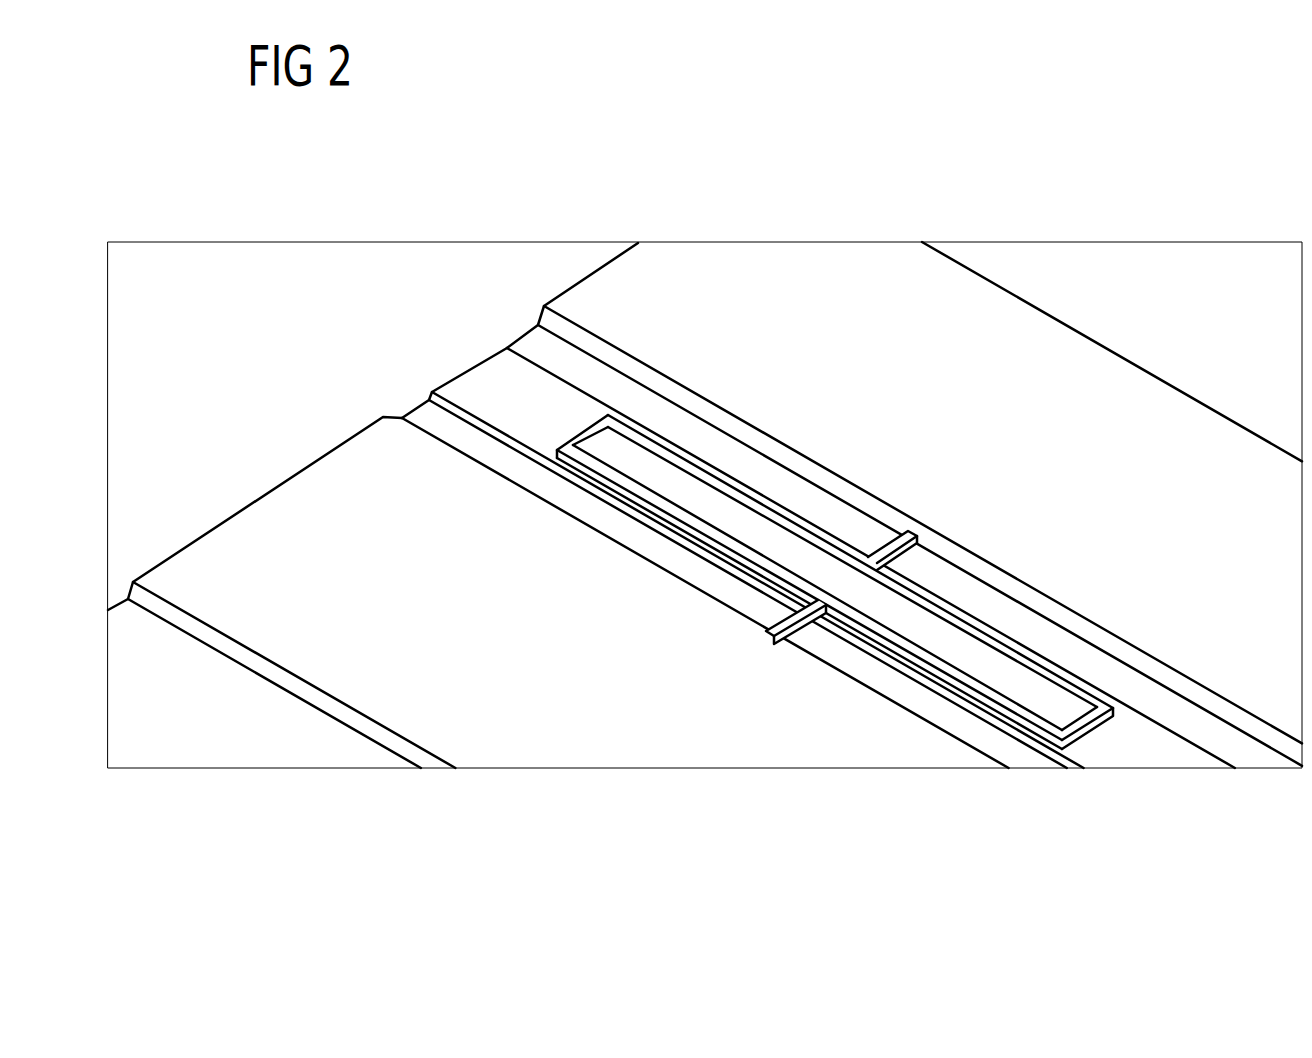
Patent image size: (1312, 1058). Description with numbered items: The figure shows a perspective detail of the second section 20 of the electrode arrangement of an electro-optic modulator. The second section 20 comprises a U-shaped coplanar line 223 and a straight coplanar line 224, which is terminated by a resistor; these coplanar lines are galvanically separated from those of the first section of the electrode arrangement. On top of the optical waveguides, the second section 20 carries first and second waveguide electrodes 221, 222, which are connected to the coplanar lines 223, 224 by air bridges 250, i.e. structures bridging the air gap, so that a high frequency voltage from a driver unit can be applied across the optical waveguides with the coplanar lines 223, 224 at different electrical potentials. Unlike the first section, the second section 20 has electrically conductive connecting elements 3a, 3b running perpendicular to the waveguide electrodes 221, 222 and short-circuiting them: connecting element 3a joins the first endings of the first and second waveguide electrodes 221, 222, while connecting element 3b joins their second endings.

The second section of the electrode arrangement 20 is at (992, 206).
The first waveguide electrode 221 is at (737, 487).
The second waveguide electrode 222 is at (679, 513).
The U-shaped coplanar line 223 is at (1110, 392).
The straight coplanar line 224 is at (390, 707).
The air bridge 250 is at (893, 543).
The connecting element 3a is at (573, 437).
The connecting element 3b is at (1090, 723).